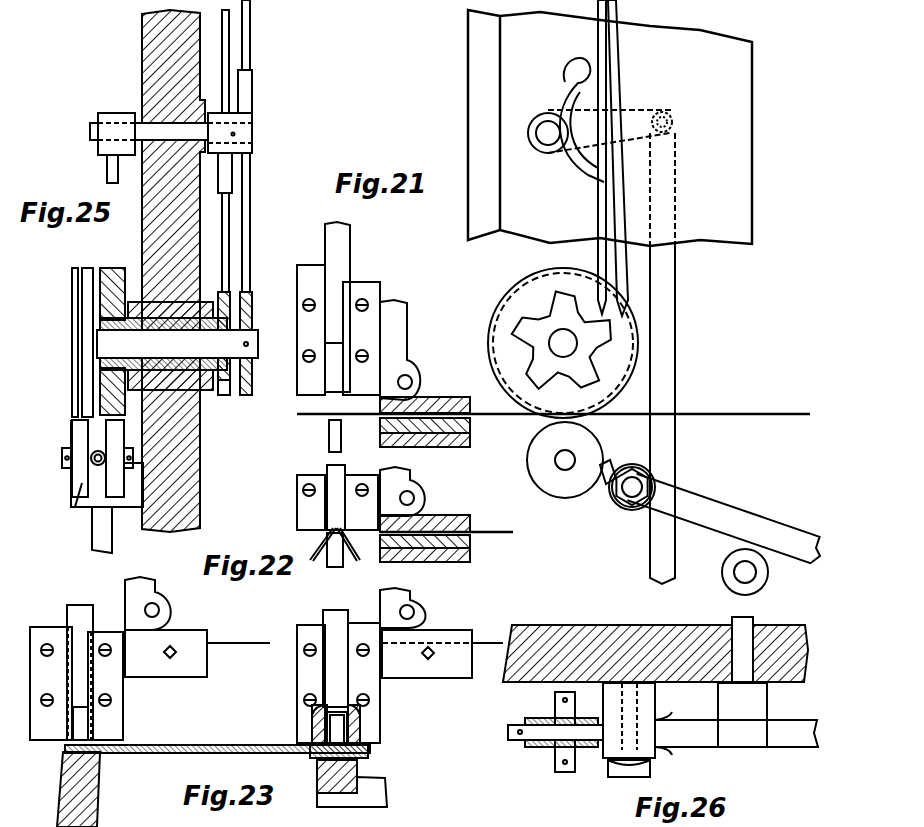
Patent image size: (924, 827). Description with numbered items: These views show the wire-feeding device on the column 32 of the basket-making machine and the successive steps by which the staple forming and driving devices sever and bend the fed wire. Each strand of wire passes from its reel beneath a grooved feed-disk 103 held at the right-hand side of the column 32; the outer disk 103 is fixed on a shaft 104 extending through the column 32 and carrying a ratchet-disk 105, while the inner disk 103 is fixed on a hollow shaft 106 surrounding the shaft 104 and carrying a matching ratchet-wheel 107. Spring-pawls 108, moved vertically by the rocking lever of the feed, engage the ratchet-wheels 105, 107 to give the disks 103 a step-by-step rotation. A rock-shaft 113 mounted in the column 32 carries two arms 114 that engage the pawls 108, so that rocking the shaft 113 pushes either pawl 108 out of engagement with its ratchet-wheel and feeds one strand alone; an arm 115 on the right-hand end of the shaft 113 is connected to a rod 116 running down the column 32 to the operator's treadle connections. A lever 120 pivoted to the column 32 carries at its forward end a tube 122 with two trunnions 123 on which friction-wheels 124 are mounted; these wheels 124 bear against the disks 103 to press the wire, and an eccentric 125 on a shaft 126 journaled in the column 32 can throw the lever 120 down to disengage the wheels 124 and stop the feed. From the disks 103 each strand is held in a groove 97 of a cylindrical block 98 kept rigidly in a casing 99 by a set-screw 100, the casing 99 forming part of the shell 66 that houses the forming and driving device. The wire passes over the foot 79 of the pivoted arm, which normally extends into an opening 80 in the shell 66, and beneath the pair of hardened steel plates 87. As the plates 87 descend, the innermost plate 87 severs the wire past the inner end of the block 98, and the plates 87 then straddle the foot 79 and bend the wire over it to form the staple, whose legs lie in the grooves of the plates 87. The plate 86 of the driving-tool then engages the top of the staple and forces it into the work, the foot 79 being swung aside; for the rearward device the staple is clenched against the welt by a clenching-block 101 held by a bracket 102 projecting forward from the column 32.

In FIG. 25, the column 32 is at (200, 440).
In FIG. 21, the column 32 is at (610, 128).
In FIG. 26, the column 32 is at (590, 617).
In FIG. 22, the shell 66 is at (398, 345).
In FIG. 23, the shell 66 is at (433, 615).
In FIG. 22, the foot 79 is at (329, 438).
In FIG. 22, the opening 80 is at (340, 252).
In FIG. 22, the plate 86 is at (343, 470).
In FIG. 23, the plate 86 is at (88, 624).
In FIG. 22, the hardened steel plate 87 is at (338, 397).
In FIG. 23, the hardened steel plate 87 is at (205, 683).
In FIG. 22, the groove 97 is at (380, 414).
In FIG. 22, the cylindrical block 98 is at (445, 435).
In FIG. 22, the casing 99 is at (455, 392).
In FIG. 23, the casing 99 is at (314, 654).
In FIG. 23, the set-screw 100 is at (173, 650).
In FIG. 23, the clenching-block 101 is at (360, 771).
In FIG. 23, the bracket 102 is at (385, 795).
In FIG. 25, the grooved feed-disk 103 is at (110, 268).
In FIG. 21, the grooved feed-disk 103 is at (528, 287).
In FIG. 25, the shaft 104 is at (177, 344).
In FIG. 21, the shaft 104 is at (563, 343).
In FIG. 25, the ratchet-disk 105 is at (252, 368).
In FIG. 21, the ratchet-disk 105 is at (561, 340).
In FIG. 25, the hollow shaft 106 is at (200, 302).
In FIG. 25, the ratchet-wheel 107 is at (226, 388).
In FIG. 25, the spring-pawl 108 is at (246, 250).
In FIG. 21, the spring-pawl 108 is at (608, 12).
In FIG. 25, the rock-shaft 113 is at (150, 128).
In FIG. 21, the rock-shaft 113 is at (548, 140).
In FIG. 25, the arm 114 is at (243, 113).
In FIG. 21, the arm 114 is at (562, 80).
In FIG. 25, the arm 115 is at (110, 118).
In FIG. 21, the arm 115 is at (634, 120).
In FIG. 25, the rod 116 is at (107, 168).
In FIG. 21, the rod 116 is at (665, 300).
In FIG. 25, the lever 120 is at (92, 453).
In FIG. 21, the lever 120 is at (723, 518).
In FIG. 26, the lever 120 is at (698, 735).
In FIG. 25, the tube 122 is at (96, 455).
In FIG. 21, the tube 122 is at (632, 487).
In FIG. 26, the tube 122 is at (548, 748).
In FIG. 25, the trunnion 123 is at (65, 458).
In FIG. 21, the trunnion 123 is at (603, 482).
In FIG. 26, the trunnion 123 is at (555, 697).
In FIG. 25, the friction-wheel 124 is at (82, 483).
In FIG. 21, the friction-wheel 124 is at (563, 470).
In FIG. 21, the eccentric 125 is at (738, 582).
In FIG. 26, the eccentric 125 is at (755, 715).
In FIG. 21, the shaft 126 is at (745, 560).
In FIG. 26, the shaft 126 is at (748, 622).